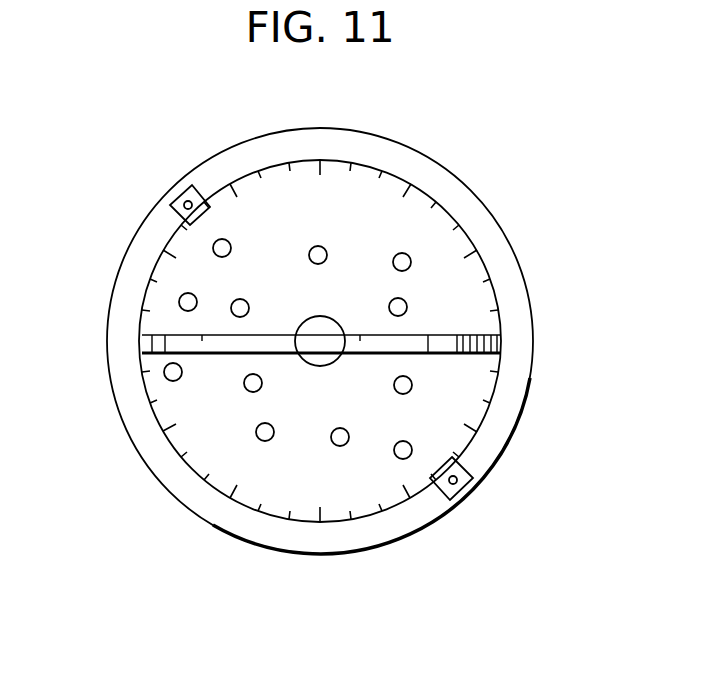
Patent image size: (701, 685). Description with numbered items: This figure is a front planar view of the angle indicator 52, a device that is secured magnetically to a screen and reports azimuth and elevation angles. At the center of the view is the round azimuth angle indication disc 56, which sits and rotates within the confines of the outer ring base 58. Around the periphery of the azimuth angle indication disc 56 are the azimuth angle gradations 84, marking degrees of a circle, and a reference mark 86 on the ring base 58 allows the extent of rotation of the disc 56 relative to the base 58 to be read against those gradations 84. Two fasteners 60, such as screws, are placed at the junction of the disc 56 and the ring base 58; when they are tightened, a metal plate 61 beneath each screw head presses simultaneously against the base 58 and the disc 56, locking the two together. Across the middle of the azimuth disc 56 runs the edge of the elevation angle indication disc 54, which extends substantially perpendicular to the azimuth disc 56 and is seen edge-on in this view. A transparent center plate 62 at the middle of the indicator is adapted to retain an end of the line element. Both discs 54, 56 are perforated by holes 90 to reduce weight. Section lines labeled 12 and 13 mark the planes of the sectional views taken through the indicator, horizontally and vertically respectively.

The section line 12- 12 is at (134, 349).
The section line 13- 13 is at (318, 155).
The angle indicator 52 is at (474, 184).
The elevation angle indication disc 54 is at (470, 354).
The azimuth angle indication disc 56 is at (287, 492).
The outer ring base 58 is at (140, 443).
The fasteners 60 is at (192, 184).
The metal plate 61 is at (172, 216).
The center plate 62 is at (320, 364).
The azimuth angle gradations 84 is at (233, 492).
The reference mark 86 is at (143, 392).
The holes 90 is at (247, 306).